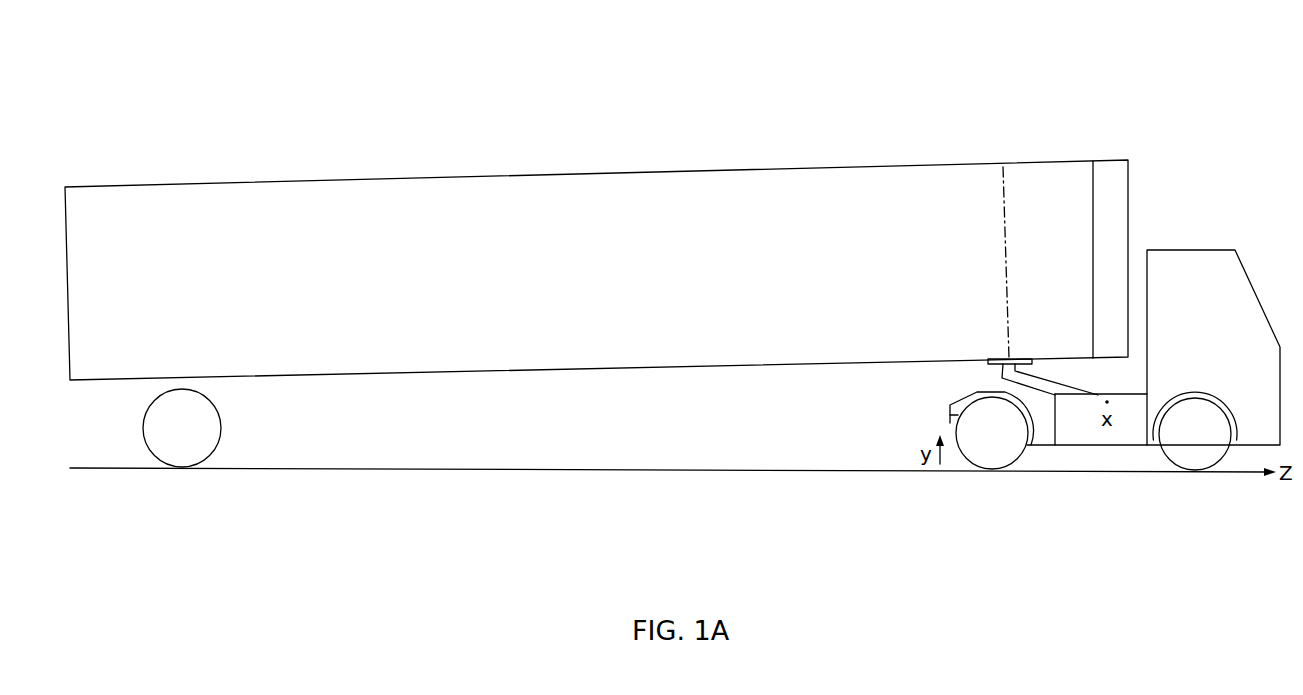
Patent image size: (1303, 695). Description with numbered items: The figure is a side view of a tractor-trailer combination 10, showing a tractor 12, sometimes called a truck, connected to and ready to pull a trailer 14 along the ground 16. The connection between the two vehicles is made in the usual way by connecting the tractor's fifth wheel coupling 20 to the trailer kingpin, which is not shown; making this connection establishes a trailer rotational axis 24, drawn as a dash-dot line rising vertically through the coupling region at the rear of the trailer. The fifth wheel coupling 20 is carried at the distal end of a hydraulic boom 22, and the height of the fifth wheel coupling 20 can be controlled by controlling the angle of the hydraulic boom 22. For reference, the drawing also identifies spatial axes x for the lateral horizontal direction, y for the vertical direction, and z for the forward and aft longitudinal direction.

The tractor-trailer combination 10 is at (985, 66).
The tractor 12 is at (1205, 265).
The trailer 14 is at (833, 170).
The ground 16 is at (510, 470).
The fifth wheel coupling 20 is at (1002, 366).
The hydraulic boom 22 is at (1058, 388).
The trailer rotational axis 24 is at (1005, 172).